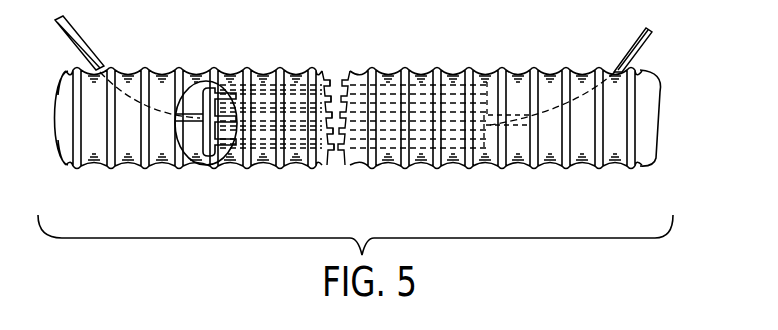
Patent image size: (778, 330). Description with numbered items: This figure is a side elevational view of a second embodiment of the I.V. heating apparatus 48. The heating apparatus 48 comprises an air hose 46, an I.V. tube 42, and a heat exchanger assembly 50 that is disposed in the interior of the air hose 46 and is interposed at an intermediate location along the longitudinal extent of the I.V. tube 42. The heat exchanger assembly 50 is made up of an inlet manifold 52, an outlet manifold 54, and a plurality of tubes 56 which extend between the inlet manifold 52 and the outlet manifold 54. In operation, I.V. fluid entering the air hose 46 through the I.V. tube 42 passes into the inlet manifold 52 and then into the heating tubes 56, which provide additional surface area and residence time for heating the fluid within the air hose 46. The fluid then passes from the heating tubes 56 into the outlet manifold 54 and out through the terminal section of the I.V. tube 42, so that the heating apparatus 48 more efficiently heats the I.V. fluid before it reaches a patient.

The I.V. tube 42 is at (80, 44).
The air hose 46 is at (135, 72).
The I.V. heating apparatus 48 is at (251, 59).
The heat exchanger assembly 50 is at (263, 133).
The inlet manifold 52 is at (197, 143).
The outlet manifold 54 is at (483, 165).
The tubes 56 is at (325, 76).